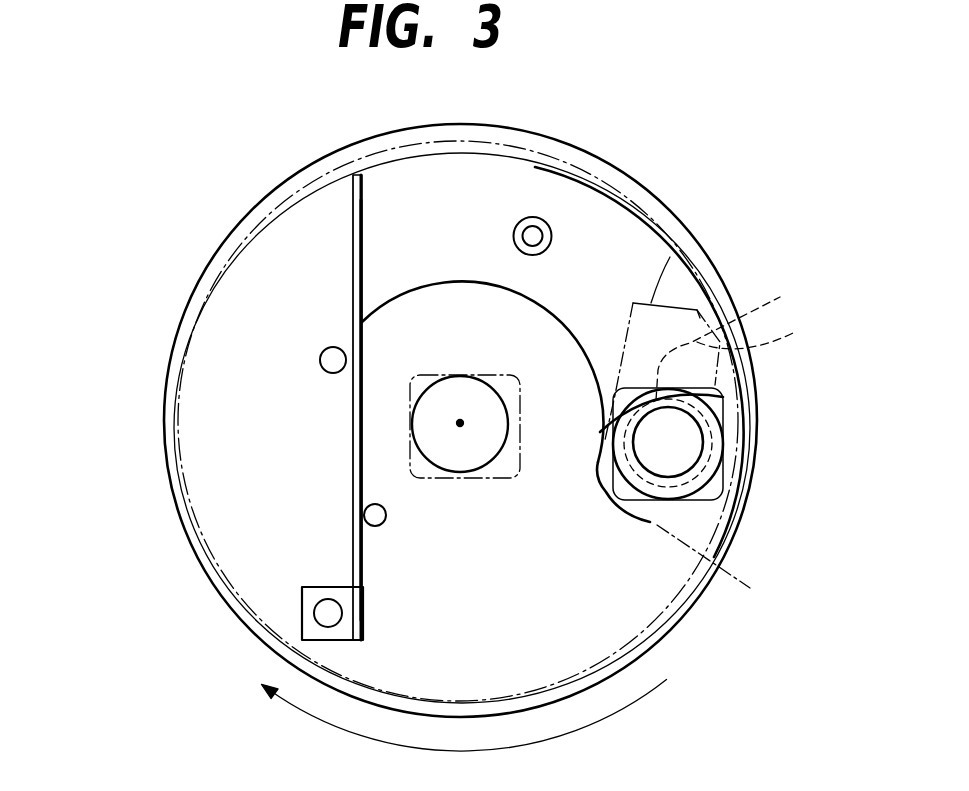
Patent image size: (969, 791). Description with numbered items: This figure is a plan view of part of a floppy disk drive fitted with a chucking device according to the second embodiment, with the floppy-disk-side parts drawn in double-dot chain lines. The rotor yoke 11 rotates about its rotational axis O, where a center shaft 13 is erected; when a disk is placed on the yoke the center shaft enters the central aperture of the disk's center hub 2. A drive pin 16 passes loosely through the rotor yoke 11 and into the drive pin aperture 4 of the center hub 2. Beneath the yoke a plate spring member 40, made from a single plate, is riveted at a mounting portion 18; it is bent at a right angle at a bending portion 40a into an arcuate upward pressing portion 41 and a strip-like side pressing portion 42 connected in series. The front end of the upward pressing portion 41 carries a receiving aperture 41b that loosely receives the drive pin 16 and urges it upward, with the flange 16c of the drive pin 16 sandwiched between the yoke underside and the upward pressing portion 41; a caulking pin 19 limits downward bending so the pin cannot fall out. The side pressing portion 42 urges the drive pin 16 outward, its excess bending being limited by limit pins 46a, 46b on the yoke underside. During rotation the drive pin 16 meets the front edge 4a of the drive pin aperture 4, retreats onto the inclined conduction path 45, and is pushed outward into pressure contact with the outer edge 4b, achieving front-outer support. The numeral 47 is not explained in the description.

The center hub 2 is at (202, 547).
The drive pin aperture 4 is at (670, 257).
The front edge 4a is at (722, 564).
The outer edge 4b is at (760, 334).
The rotor yoke 11 is at (167, 363).
The center shaft 13 is at (497, 460).
The drive pin 16 is at (688, 448).
The flange 16c is at (705, 493).
The mounting portion 18 is at (300, 613).
The caulking pin 19 is at (533, 217).
The plate spring member 40 is at (392, 183).
The bending portion 40a is at (353, 253).
The upward pressing portion 41 is at (610, 225).
The receiving aperture 41b is at (748, 322).
The side pressing portion 42 is at (353, 441).
The conduction path 45 is at (603, 402).
The limit pin 46a is at (322, 356).
The limit pin 46b is at (383, 528).
The pin bushing 47 is at (623, 493).
The rotational axis O is at (462, 422).